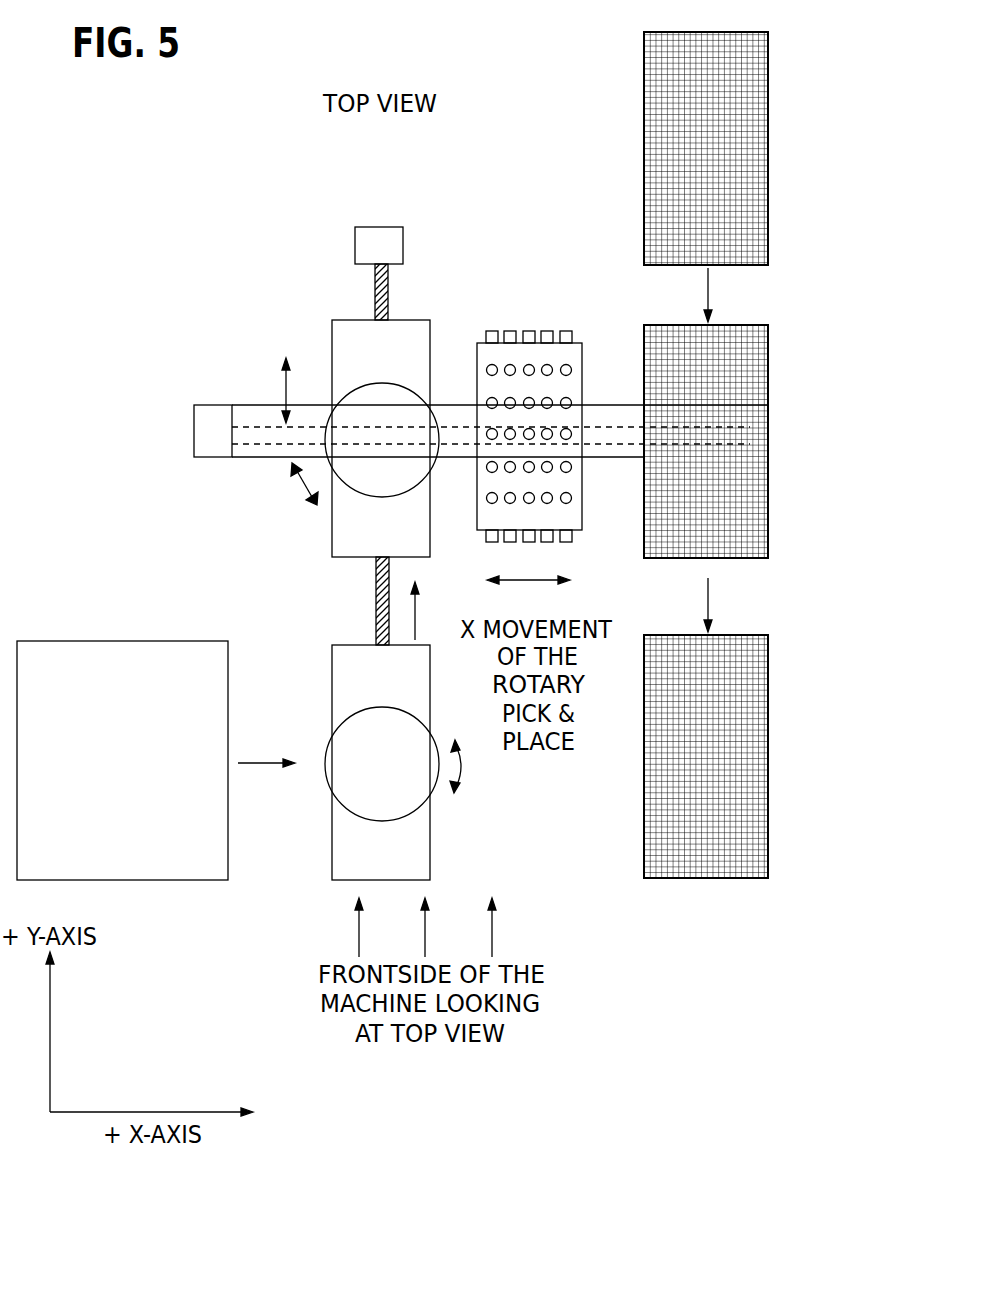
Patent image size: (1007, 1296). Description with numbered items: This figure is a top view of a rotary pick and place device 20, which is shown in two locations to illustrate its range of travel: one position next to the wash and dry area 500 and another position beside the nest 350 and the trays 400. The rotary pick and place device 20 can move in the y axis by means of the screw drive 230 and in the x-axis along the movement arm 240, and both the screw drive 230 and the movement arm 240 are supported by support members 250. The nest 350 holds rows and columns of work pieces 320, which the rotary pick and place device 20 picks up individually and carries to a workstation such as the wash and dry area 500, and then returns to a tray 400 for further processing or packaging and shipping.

The rotary pick and place device 20 is at (332, 530).
The screw drive 230 is at (376, 595).
The movement arm 240 is at (248, 460).
The support members 250 is at (375, 226).
The work piece 320 is at (569, 503).
The nest 350 is at (547, 330).
The tray 400 is at (768, 116).
The wash and dry area 500 is at (176, 880).